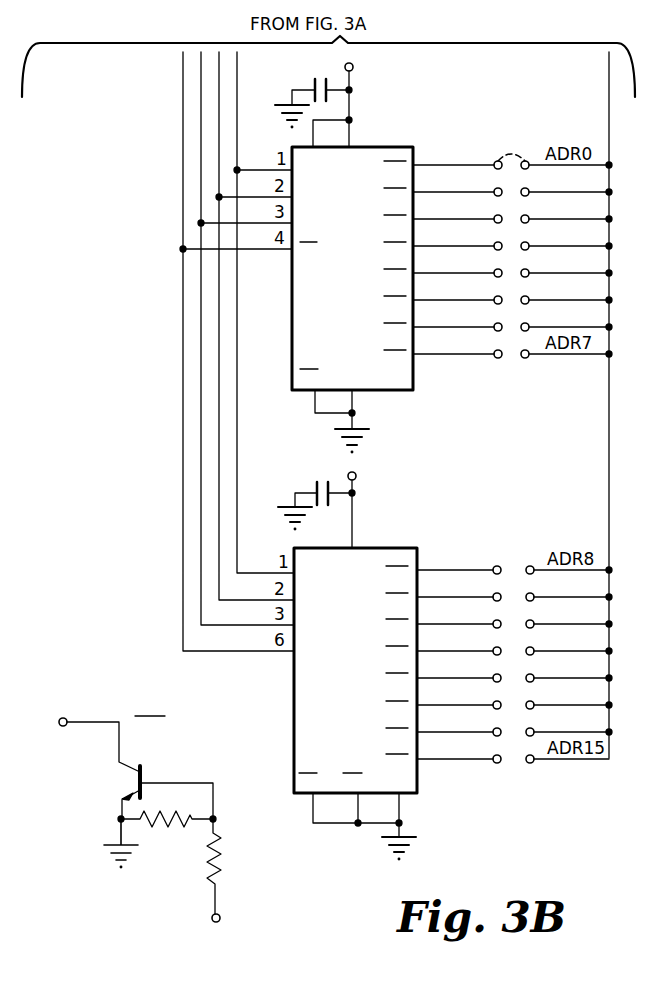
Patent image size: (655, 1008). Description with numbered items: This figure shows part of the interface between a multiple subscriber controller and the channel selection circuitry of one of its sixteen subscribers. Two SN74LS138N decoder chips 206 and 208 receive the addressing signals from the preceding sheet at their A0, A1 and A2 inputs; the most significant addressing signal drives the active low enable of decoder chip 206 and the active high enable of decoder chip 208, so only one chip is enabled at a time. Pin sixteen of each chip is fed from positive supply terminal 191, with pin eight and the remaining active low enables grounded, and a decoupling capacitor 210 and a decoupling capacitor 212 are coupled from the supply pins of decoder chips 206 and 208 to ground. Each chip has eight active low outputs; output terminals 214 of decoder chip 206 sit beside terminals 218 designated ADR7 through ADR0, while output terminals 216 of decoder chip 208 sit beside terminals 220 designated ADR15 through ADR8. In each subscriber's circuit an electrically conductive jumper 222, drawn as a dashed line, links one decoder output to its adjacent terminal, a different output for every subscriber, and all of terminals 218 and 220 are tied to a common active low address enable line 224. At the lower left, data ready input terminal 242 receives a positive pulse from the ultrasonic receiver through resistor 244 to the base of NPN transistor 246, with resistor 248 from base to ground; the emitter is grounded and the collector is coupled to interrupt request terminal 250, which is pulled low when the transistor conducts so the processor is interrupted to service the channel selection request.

The positive supply terminal 191 is at (353, 72).
The decoder chip 206 is at (393, 147).
The decoder chip 208 is at (398, 547).
The decoupling capacitor 210 is at (312, 86).
The decoupling capacitor 212 is at (315, 488).
The output terminals 214 is at (497, 361).
The output terminals 216 is at (495, 562).
The terminals 218 is at (525, 361).
The terminals 220 is at (530, 562).
The jumper 222 is at (494, 156).
The common address enable line 224 is at (609, 115).
The data ready input terminal 242 is at (212, 918).
The resistor 244 is at (221, 854).
The NPN transistor 246 is at (143, 778).
The resistor 248 is at (170, 825).
The interrupt request terminal 250 is at (64, 717).